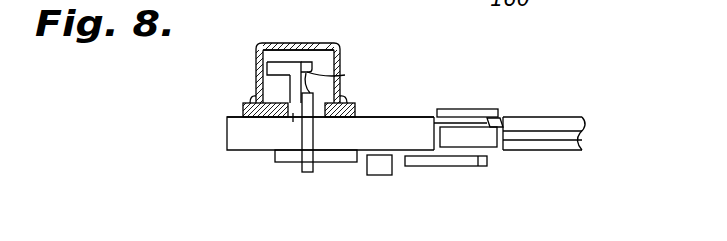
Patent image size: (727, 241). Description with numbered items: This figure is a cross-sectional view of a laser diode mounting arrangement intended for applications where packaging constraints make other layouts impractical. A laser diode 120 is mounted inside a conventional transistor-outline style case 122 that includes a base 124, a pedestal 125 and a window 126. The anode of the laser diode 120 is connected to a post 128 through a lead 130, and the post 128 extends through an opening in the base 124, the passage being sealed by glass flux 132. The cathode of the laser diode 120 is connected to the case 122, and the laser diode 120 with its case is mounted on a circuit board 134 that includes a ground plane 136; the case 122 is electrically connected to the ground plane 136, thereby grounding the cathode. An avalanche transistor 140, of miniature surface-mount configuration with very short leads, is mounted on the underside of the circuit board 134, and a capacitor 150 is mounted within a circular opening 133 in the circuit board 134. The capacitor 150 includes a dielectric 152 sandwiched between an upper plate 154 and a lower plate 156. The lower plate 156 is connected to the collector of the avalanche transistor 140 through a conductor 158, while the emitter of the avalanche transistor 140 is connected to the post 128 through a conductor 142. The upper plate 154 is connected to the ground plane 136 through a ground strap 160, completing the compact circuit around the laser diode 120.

The laser diode 120 is at (300, 62).
The T-05 case 122 is at (260, 42).
The base 124 is at (245, 107).
The pedestal 125 is at (277, 80).
The window 126 is at (297, 43).
The post 128 is at (302, 170).
The lead 130 is at (345, 75).
The glass flux 132 is at (298, 118).
The circular opening 133 is at (587, 133).
The circuit board 134 is at (415, 130).
The ground plane 136 is at (383, 116).
The avalanche transistor 140 is at (385, 175).
The conductor 142 is at (330, 162).
The capacitor 150 is at (500, 158).
The dielectric 152 is at (503, 120).
The upper plate 154 is at (495, 117).
The lower plate 156 is at (480, 167).
The conductor 158 is at (440, 167).
The ground strap 160 is at (472, 108).